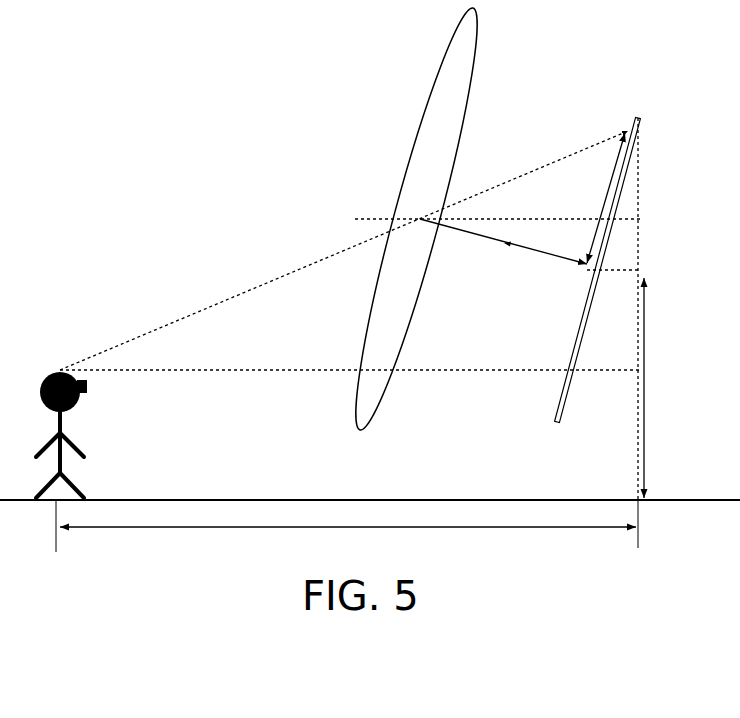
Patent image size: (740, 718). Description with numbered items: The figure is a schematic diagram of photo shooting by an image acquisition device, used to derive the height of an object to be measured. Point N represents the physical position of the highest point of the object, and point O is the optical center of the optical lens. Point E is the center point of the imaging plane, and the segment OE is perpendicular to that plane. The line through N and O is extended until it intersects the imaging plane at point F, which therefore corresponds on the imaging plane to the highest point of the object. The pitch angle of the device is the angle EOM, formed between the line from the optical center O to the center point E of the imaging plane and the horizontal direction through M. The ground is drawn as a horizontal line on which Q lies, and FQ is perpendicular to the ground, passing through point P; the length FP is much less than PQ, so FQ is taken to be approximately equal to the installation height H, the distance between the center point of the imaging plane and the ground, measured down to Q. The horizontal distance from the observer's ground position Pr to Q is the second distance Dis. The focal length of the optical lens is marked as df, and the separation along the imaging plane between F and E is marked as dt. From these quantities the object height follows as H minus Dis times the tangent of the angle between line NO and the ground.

The highest point of object N is at (350, 360).
The optical center O is at (416, 219).
The image point of highest point F is at (602, 269).
The pitch angle reference point M is at (504, 219).
The ground-level reference point P is at (619, 260).
The center point of imaging plane E is at (515, 244).
The installation height H is at (653, 388).
The ground point Q is at (647, 333).
The ground position of user Pr is at (61, 462).
The second distance Dis is at (348, 538).
The focal length df is at (344, 250).
The distance between F and E along screen dt is at (606, 198).